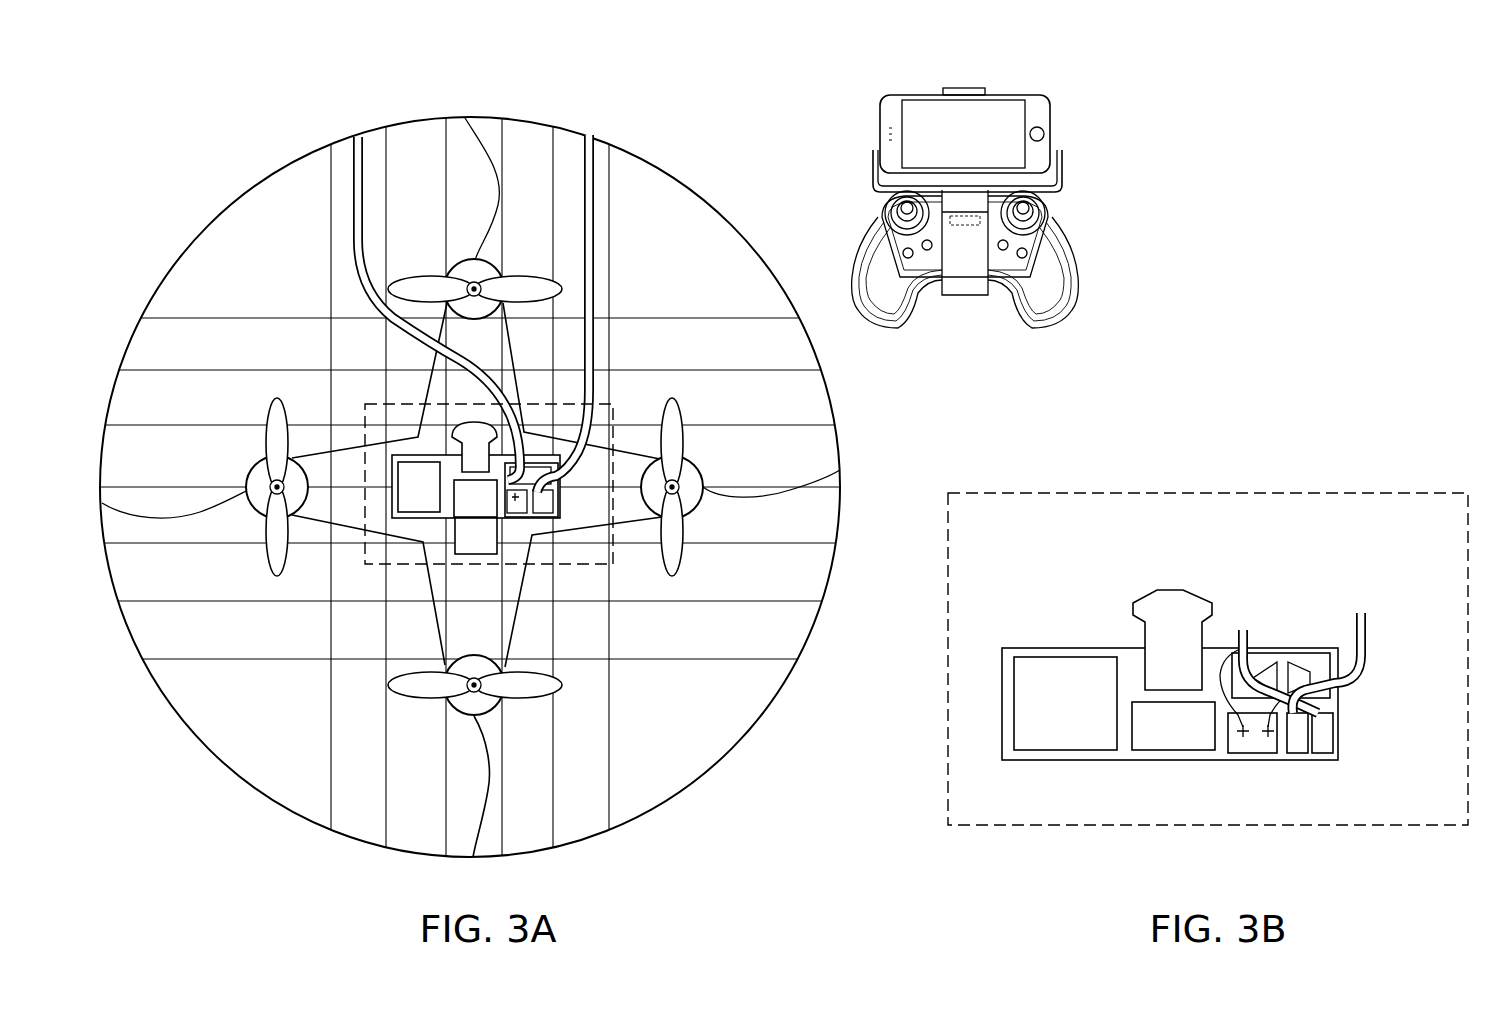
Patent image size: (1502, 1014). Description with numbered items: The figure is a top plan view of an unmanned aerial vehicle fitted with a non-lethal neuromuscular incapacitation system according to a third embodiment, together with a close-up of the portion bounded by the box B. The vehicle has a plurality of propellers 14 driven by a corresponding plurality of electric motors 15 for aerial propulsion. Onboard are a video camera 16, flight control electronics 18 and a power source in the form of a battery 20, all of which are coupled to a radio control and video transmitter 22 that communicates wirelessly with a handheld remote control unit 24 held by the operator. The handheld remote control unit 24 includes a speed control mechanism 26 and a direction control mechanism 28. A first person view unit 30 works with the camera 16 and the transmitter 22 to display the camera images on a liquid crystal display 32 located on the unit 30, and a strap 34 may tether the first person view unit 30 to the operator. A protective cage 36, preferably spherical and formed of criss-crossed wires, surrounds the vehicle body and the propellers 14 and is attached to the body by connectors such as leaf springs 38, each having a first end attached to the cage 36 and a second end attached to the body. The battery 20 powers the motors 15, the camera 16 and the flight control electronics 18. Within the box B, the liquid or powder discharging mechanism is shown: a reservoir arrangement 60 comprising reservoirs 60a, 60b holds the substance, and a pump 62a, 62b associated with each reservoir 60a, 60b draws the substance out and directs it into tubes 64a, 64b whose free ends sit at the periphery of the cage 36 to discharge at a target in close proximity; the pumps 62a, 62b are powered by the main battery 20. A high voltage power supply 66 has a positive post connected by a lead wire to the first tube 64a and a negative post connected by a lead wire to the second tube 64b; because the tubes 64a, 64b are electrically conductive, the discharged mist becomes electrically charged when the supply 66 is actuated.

In FIG. 3A, the propellers 14 is at (272, 408).
In FIG. 3A, the electric motors 15 is at (258, 475).
In FIG. 3A, the onboard video camera 16 is at (486, 422).
In FIG. 3A, the onboard flight control electronics 18 is at (414, 473).
In FIG. 3B, the onboard flight control electronics 18 is at (1063, 675).
In FIG. 3A, the battery 20 is at (465, 415).
In FIG. 3A, the radio control and video transmitter 22 is at (483, 500).
In FIG. 3B, the radio control and video transmitter 22 is at (1204, 703).
In FIG. 3A, the handheld remote control unit 24 is at (963, 297).
In FIG. 3A, the speed control mechanism 26 is at (885, 215).
In FIG. 3A, the direction control mechanism 28 is at (1045, 215).
In FIG. 3A, the first person view (FPV) unit 30 is at (965, 204).
In FIG. 3A, the liquid crystal display (LCD) 32 is at (930, 100).
In FIG. 3A, the strap 34 is at (873, 165).
In FIG. 3A, the protective cage 36 is at (245, 188).
In FIG. 3A, the leaf springs 38 is at (490, 773).
In FIG. 3B, the actuator 60 is at (1198, 590).
In FIG. 3B, the reservoir 60a is at (1297, 755).
In FIG. 3B, the reservoir 60b is at (1327, 733).
In FIG. 3B, the pump 62a is at (1239, 647).
In FIG. 3B, the pump 62b is at (1313, 653).
In FIG. 3A, the first tube 64a is at (368, 160).
In FIG. 3A, the second tube 64b is at (594, 145).
In FIG. 3B, the second tube 64b is at (1362, 613).
In FIG. 3B, the high voltage power supply 66 is at (1248, 755).
In FIG. 3A, the box B is at (358, 418).